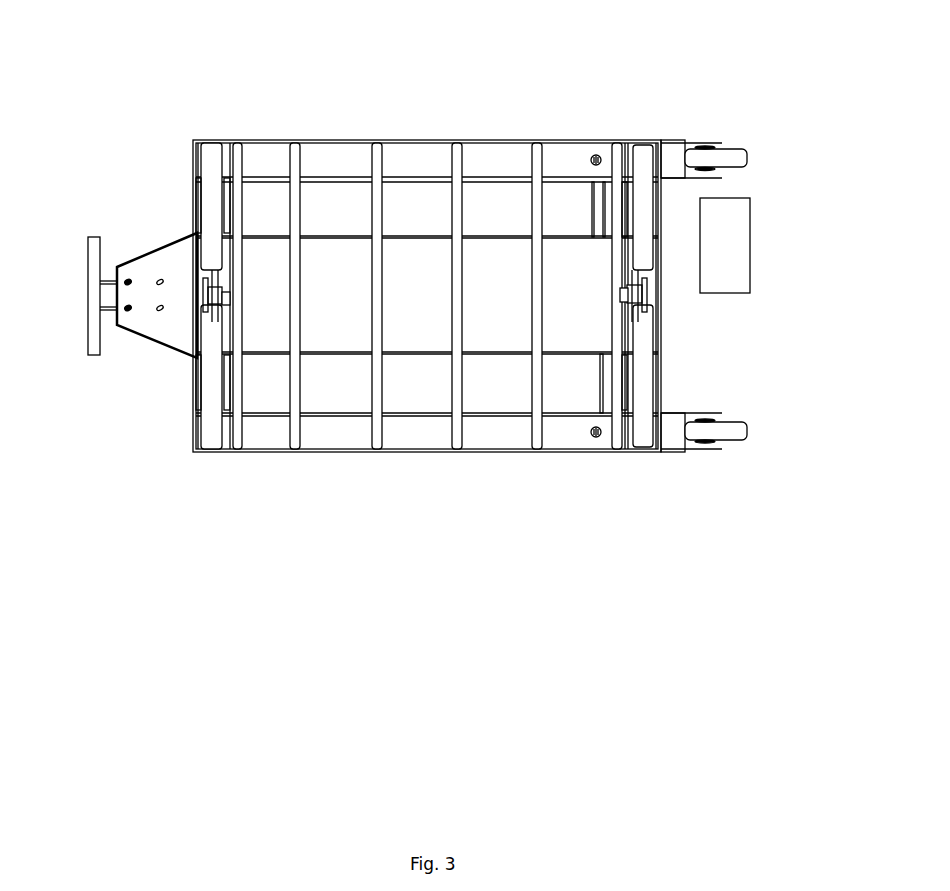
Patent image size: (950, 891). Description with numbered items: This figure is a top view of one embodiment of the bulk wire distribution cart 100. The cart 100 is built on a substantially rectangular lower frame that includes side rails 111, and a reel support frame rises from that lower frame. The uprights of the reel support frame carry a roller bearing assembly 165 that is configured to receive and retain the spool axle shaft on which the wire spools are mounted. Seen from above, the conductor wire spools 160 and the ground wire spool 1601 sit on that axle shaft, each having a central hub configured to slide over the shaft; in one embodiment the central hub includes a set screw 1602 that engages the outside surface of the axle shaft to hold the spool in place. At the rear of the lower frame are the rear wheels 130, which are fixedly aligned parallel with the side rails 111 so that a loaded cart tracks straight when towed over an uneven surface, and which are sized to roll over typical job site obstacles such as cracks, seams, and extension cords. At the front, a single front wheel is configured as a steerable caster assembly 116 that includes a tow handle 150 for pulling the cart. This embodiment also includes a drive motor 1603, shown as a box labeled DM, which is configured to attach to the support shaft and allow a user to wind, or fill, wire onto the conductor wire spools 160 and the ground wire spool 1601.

The bulk wire distribution cart 100 is at (469, 109).
The side rails 111 is at (363, 137).
The steerable caster assembly 116 is at (140, 253).
The rear wheels 130 is at (742, 145).
The tow handle 150 is at (83, 286).
The conductor wire spools 160 is at (538, 138).
The ground wire spool 1601 is at (240, 138).
The set screw 1602 is at (225, 287).
The drive motor 1603 is at (750, 247).
The roller bearing assembly 165 is at (667, 303).